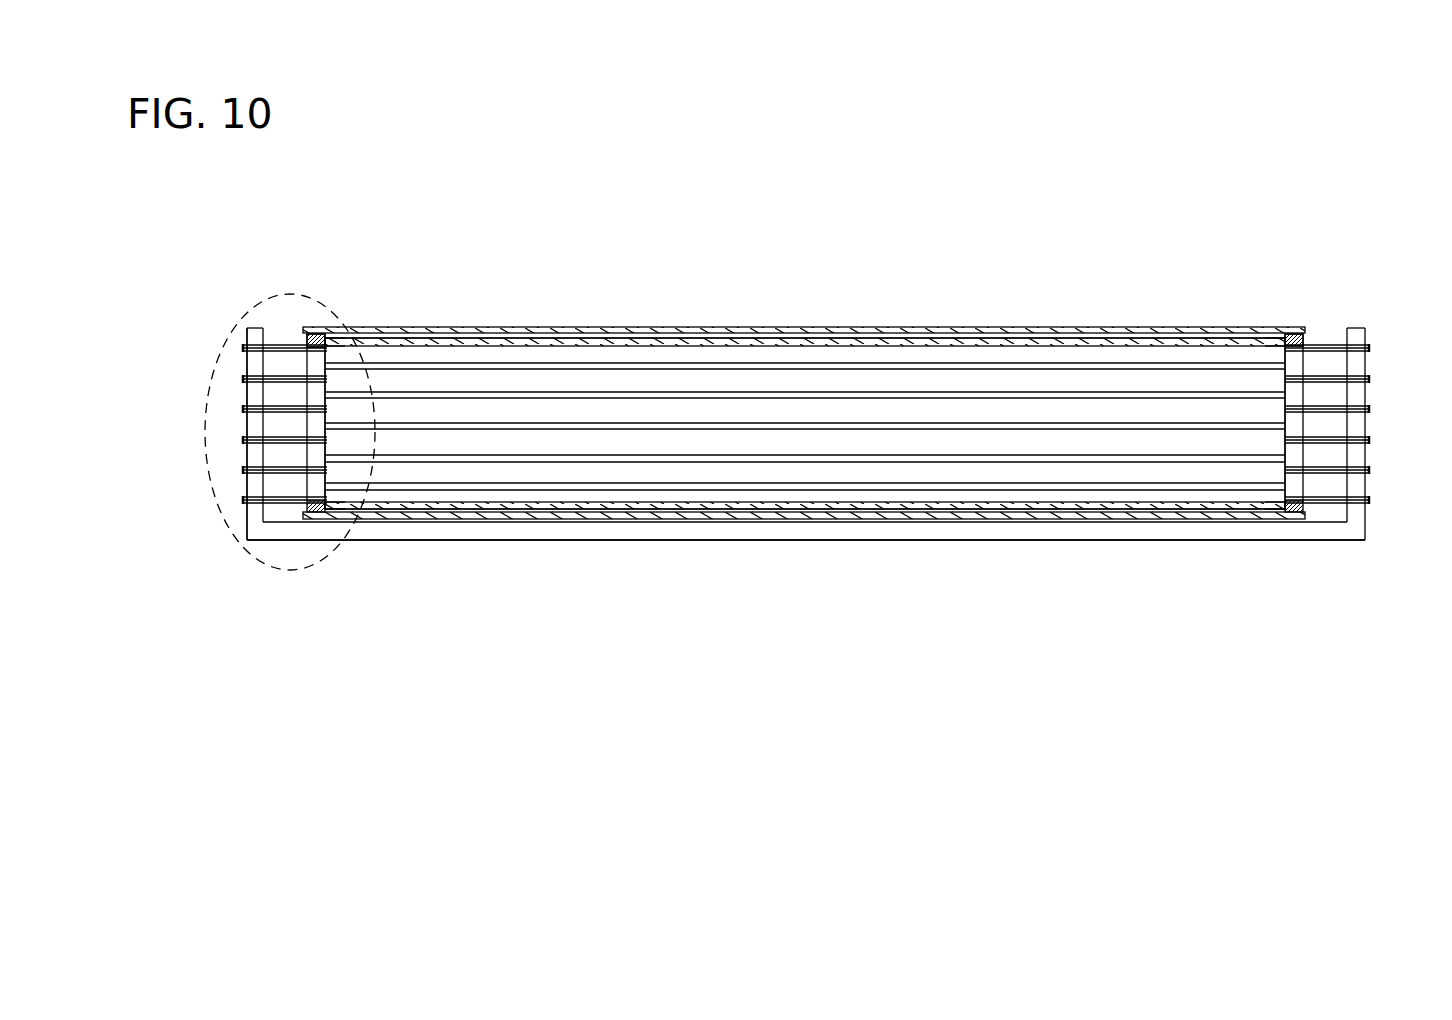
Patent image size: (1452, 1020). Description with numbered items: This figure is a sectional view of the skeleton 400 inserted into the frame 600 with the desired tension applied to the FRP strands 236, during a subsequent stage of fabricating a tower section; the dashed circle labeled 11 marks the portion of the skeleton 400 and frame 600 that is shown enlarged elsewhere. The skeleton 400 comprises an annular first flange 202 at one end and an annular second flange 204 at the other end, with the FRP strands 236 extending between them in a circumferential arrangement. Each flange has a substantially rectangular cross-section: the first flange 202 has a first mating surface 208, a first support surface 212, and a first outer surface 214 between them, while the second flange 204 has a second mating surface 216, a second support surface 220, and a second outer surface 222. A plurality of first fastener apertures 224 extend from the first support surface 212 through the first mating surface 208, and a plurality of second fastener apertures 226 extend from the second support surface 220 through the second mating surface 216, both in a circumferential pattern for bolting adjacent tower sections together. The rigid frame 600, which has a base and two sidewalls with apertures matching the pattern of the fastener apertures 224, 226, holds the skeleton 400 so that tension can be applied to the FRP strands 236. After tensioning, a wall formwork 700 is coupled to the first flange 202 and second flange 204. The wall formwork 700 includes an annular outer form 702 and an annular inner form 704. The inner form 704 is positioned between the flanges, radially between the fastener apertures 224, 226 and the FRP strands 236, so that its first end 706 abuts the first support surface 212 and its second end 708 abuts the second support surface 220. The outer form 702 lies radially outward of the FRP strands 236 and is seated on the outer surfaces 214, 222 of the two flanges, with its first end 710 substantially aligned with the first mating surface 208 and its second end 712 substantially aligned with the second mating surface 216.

The detail region 11 is at (305, 299).
The first flange 202 is at (297, 509).
The second flange 204 is at (1308, 337).
The first mating surface 208 is at (307, 337).
The first support surface 212 is at (326, 337).
The first outer surface 214 is at (310, 334).
The second mating surface 216 is at (1306, 511).
The second support surface 220 is at (1281, 335).
The second outer surface 222 is at (1297, 335).
The first fastener apertures 224 is at (312, 390).
The second fastener apertures 226 is at (1303, 390).
The FRP strands 236 is at (713, 422).
The skeleton 400 is at (1276, 152).
The frame 600 is at (1338, 548).
The wall formwork 700 is at (841, 287).
The outer form 702 is at (941, 321).
The inner form 704 is at (1018, 349).
The first end of inner form 706 is at (328, 345).
The second end of inner form 708 is at (1283, 348).
The first end of outer form 710 is at (307, 338).
The second end of outer form 712 is at (1308, 334).